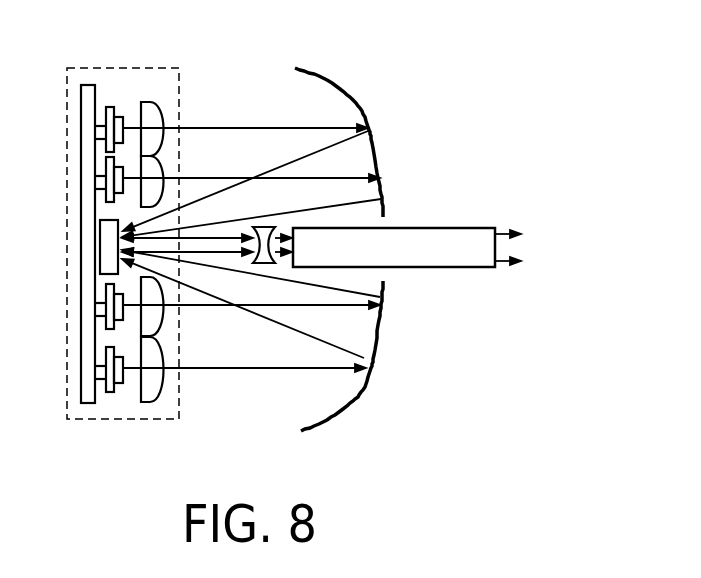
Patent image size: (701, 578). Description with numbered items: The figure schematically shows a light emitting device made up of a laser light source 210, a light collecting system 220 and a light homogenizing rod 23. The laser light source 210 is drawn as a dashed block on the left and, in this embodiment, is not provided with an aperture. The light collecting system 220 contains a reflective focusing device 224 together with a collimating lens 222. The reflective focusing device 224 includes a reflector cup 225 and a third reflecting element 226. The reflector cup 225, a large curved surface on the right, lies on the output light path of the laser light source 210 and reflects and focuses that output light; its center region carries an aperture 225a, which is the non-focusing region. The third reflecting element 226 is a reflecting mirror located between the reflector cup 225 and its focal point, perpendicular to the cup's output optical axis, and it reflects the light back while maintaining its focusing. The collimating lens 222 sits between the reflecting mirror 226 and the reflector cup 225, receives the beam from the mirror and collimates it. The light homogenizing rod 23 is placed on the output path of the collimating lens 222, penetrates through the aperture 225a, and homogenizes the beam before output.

The laser light source 210 is at (103, 67).
The third reflecting element 226 is at (113, 240).
The collimating lens 222 is at (266, 226).
The light homogenizing rod 23 is at (418, 247).
The reflector cup 225 is at (347, 97).
The aperture 225a is at (380, 272).
The reflective focusing device 224 is at (424, 63).
The light collecting system 220 is at (473, 5).